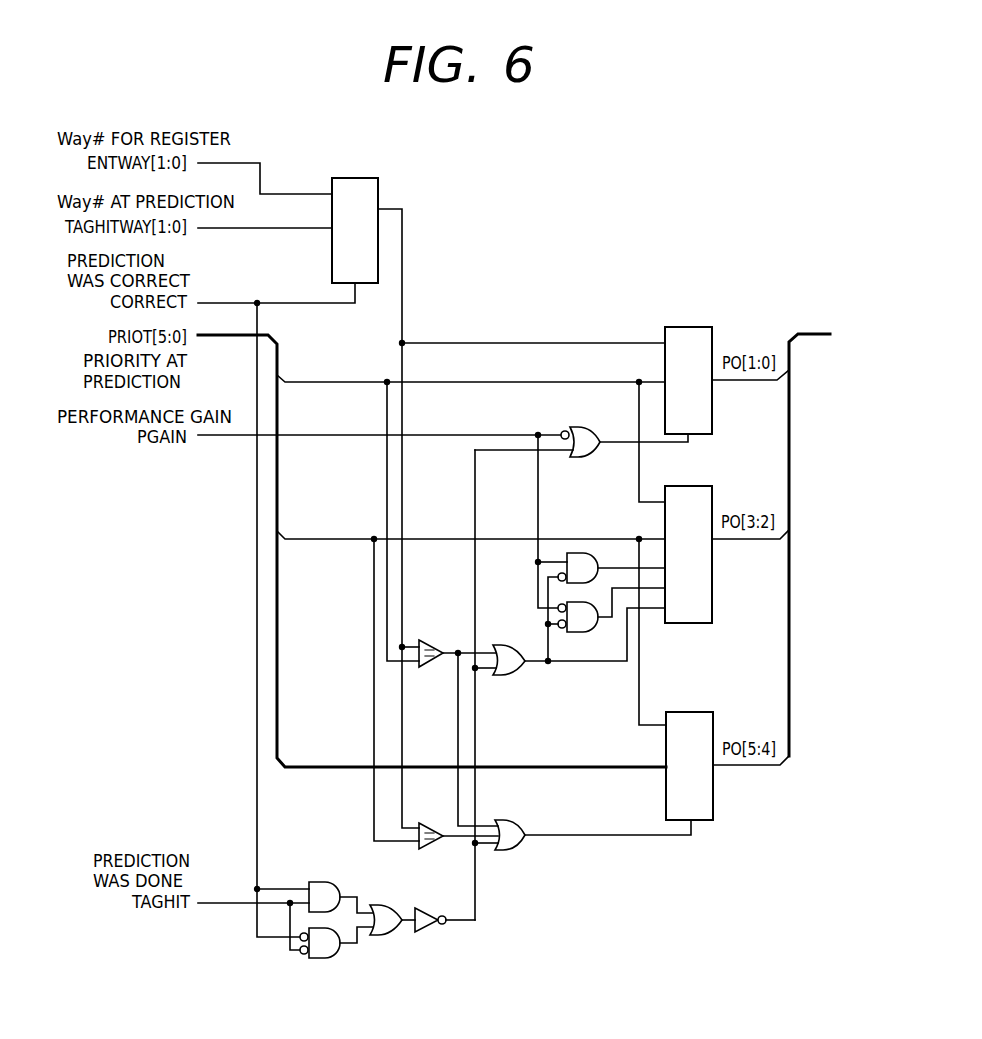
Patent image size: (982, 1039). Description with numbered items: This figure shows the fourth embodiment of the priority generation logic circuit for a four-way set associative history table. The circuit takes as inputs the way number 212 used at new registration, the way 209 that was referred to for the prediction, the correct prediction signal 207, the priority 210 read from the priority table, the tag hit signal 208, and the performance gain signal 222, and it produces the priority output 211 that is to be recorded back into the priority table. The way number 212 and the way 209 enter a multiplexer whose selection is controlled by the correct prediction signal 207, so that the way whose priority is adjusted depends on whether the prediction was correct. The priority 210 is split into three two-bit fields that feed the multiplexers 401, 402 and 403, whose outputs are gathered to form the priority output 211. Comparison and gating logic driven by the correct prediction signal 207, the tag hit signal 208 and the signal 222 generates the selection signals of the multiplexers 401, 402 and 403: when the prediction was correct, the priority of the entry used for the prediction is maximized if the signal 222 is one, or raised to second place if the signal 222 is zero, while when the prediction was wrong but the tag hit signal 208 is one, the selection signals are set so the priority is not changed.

The way number at new registration 212 is at (285, 193).
The way referred to for a prediction 209 is at (287, 231).
The correct prediction signal 207 is at (224, 301).
The priority read from the priority table 210 is at (224, 338).
The performance gain signal 222 is at (224, 440).
The tag hit signal 208 is at (227, 900).
The multiplexer 401 is at (712, 325).
The multiplexer 402 is at (712, 486).
The multiplexer 403 is at (713, 712).
The priority output 211 is at (807, 332).